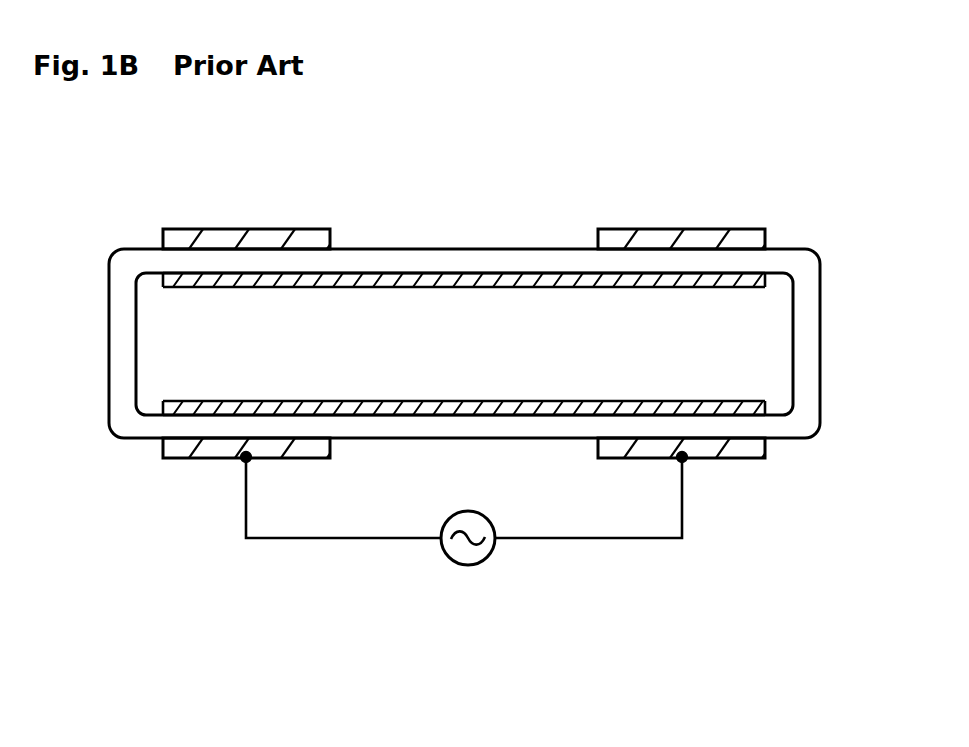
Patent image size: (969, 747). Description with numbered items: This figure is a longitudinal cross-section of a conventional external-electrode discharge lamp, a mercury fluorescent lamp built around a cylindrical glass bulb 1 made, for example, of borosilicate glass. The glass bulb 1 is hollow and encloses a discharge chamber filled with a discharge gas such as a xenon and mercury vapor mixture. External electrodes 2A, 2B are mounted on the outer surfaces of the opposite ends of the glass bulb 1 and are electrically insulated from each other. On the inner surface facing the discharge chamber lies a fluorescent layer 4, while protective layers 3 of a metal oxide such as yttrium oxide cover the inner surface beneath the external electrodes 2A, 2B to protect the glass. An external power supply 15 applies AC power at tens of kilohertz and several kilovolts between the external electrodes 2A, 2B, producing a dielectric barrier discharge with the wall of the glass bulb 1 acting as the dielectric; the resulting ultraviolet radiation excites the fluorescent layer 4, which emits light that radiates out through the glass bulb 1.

The glass bulb 1 is at (803, 250).
The external electrode 2A is at (182, 232).
The external electrode 2B is at (731, 232).
The protective layer 3 is at (296, 272).
The fluorescent layer 4 is at (478, 272).
The external power supply 15 is at (466, 566).